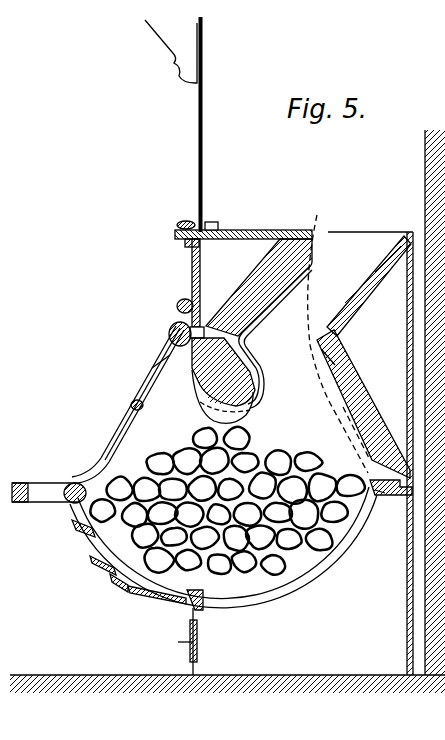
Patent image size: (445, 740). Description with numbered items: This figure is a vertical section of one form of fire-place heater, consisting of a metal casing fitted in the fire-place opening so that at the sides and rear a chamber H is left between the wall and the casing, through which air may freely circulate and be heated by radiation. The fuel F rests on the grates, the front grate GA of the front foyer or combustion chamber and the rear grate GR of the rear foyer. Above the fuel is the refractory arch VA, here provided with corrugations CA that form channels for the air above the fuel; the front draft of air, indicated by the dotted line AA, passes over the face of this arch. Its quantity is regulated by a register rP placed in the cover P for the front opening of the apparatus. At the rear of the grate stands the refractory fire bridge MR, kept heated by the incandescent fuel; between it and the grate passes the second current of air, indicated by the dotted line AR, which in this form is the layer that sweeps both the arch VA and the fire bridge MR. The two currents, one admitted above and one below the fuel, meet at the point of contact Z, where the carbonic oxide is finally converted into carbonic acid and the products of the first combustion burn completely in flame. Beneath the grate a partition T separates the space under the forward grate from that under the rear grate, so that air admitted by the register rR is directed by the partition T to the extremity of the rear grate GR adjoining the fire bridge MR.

The point of contact Z is at (338, 344).
The chamber H is at (365, 453).
The rear air current AR is at (316, 355).
The fire bridge MR is at (336, 380).
The front air current AA is at (259, 292).
The arch VA is at (252, 290).
The corrugations CA is at (212, 408).
The cover P is at (134, 405).
The register rP is at (149, 363).
The rear grate GR is at (296, 582).
The front grate GA is at (100, 565).
The fuel F is at (227, 501).
The partition T is at (204, 641).
The rear register rR is at (187, 636).